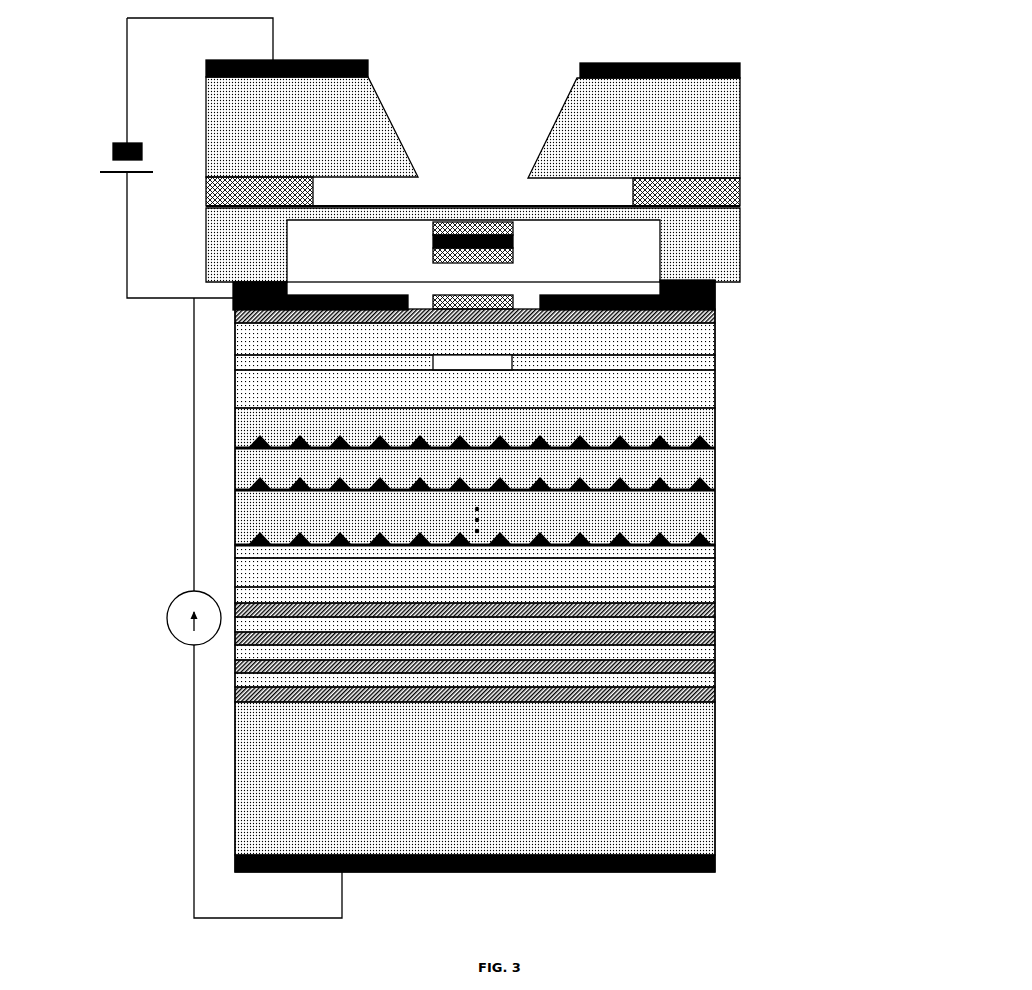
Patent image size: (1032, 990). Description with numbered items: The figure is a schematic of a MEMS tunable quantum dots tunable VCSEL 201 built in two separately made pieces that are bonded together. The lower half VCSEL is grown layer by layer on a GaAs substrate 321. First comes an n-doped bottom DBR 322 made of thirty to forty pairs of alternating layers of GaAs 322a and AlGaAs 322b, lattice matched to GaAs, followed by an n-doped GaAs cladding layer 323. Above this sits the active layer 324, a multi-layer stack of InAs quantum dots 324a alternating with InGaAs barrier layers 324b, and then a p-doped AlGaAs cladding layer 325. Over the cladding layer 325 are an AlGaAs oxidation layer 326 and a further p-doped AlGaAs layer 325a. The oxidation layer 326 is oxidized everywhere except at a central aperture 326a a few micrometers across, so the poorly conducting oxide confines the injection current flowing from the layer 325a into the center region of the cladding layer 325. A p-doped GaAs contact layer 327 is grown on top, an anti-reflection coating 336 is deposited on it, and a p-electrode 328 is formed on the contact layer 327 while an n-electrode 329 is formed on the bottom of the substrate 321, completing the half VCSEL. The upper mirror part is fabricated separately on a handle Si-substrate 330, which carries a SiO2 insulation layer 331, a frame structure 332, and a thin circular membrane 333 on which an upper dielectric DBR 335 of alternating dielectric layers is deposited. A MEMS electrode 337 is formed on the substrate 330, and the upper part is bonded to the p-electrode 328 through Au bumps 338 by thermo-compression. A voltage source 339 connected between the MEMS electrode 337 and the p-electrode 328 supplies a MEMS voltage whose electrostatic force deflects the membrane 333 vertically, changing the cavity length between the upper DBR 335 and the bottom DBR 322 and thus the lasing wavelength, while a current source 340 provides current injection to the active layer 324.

The quantum dots tunable VCSEL 201 is at (393, 577).
The GaAs substrate 321 is at (475, 778).
The n-doped DBR 322 is at (549, 651).
The GaAs layer 322a is at (733, 587).
The AlGaAs layer 322b is at (719, 681).
The n-doped GaAs cladding layer 323 is at (475, 566).
The active layer 324 is at (556, 491).
The InAs quantum dots 324a is at (717, 489).
The InGaAs barrier layers 324b is at (707, 526).
The p-doped AlGaAs cladding layer 325 is at (475, 389).
The p-doped AlGaAs layer 325a is at (475, 339).
The AlGaAs oxidation layer 326 is at (707, 361).
The aperture 326a is at (492, 369).
The p-doped GaAs contact layer 327 is at (705, 316).
The p-electrode 328 is at (428, 283).
The n-electrode 329 is at (438, 875).
The handle Si-substrate 330 is at (473, 127).
The SiO2 layer 331 is at (728, 200).
The frame structure 332 is at (728, 243).
The membrane 333 is at (523, 203).
The upper dielectric DBR 335 is at (430, 248).
The anti-reflection coating 336 is at (480, 299).
The MEMS electrode 337 is at (340, 33).
The Au bumps 338 is at (718, 288).
The voltage source 339 is at (160, 158).
The current source 340 is at (207, 608).